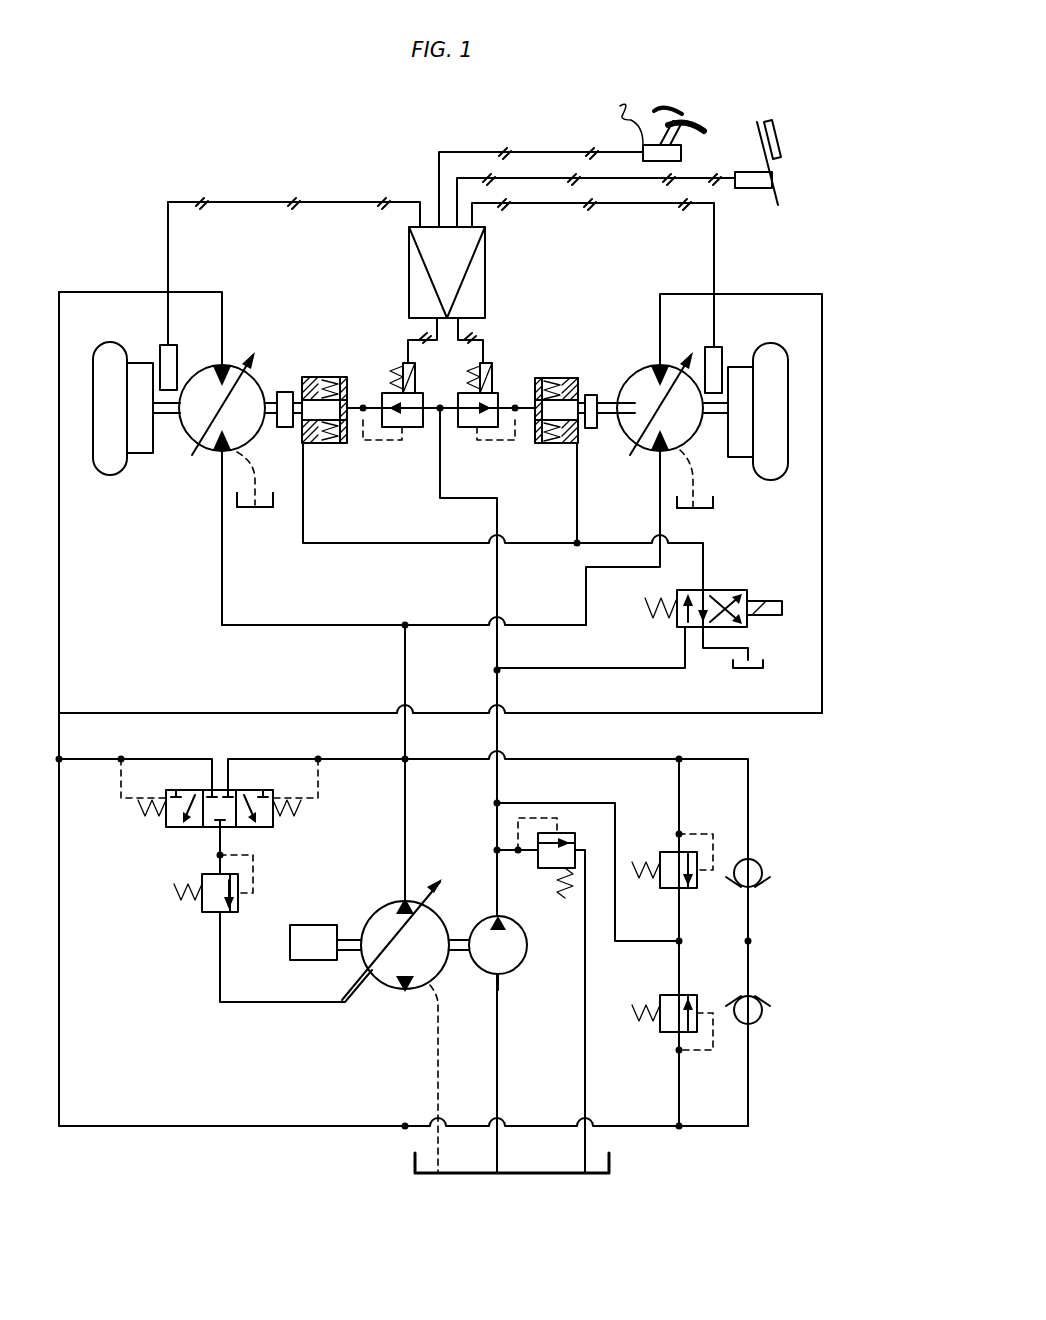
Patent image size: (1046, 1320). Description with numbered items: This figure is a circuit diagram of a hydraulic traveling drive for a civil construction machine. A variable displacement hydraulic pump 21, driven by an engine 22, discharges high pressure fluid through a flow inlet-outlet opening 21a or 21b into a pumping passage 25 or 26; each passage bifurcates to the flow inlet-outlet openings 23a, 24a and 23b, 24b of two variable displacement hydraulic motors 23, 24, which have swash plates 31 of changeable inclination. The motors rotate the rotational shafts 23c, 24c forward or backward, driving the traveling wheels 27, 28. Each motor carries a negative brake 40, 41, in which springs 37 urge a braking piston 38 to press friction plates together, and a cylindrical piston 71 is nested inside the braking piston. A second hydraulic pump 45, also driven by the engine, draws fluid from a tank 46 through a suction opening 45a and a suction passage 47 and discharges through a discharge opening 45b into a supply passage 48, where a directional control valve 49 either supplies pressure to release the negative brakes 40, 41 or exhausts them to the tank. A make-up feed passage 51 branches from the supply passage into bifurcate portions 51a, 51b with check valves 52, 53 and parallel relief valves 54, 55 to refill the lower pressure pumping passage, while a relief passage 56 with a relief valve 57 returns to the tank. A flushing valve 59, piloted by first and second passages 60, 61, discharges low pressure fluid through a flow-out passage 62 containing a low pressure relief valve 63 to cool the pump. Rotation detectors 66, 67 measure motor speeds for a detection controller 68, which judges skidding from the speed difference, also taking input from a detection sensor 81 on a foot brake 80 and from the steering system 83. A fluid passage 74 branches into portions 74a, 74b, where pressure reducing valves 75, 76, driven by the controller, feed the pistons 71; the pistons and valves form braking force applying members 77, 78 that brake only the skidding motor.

The variable displacement hydraulic pump 21 is at (362, 925).
The flow inlet-outlet opening 21a is at (400, 900).
The flow inlet-outlet opening 21b is at (398, 995).
The engine 22 is at (306, 925).
The variable displacement hydraulic motor 23 is at (236, 497).
The flow inlet-outlet opening 23a is at (216, 456).
The flow inlet-outlet opening 23b is at (217, 370).
The rotational shaft 23c is at (166, 418).
The variable displacement hydraulic motor 24 is at (692, 462).
The flow inlet-outlet opening 24a is at (655, 456).
The flow inlet-outlet opening 24b is at (652, 370).
The rotational shaft 24c is at (716, 418).
The pumping passage 25 is at (404, 672).
The pumping passage 26 is at (60, 990).
The traveling wheel 27 is at (108, 345).
The traveling wheel 28 is at (775, 346).
The swash plate 31 is at (250, 354).
The springs 37 is at (330, 377).
The braking piston 38 is at (305, 376).
The negative brake 40 is at (340, 456).
The negative brake 41 is at (562, 458).
The hydraulic pump 45 is at (508, 976).
The suction opening 45a is at (494, 980).
The discharge opening 45b is at (492, 920).
The tank 46 is at (712, 510).
The suction passage 47 is at (499, 1040).
The supply passage 48 is at (612, 670).
The directional control valve 49 is at (742, 590).
The make-up feed passage 51 is at (642, 943).
The bifurcate portion 51a is at (722, 762).
The bifurcate portion 51b is at (716, 1130).
The check valve 52 is at (760, 865).
The check valve 53 is at (760, 1001).
The relief valve 54 is at (664, 892).
The relief valve 55 is at (666, 1036).
The relief passage 56 is at (584, 950).
The relief valve 57 is at (540, 870).
The flushing valve 59 is at (176, 830).
The first passage 60 is at (278, 762).
The second passage 61 is at (98, 762).
The flow-out passage 62 is at (218, 985).
The low pressure relief valve 63 is at (212, 916).
The rotation detector 66 is at (162, 347).
The rotation detector 67 is at (722, 350).
The detection controller 68 is at (487, 270).
The cylindrical piston 71 is at (284, 430).
The fluid passage 74 is at (496, 590).
The bifurcate portion 74a is at (377, 442).
The bifurcate portion 74b is at (501, 442).
The pressure reducing valve 75 is at (384, 394).
The pressure reducing valve 76 is at (494, 394).
The braking force applying member 77 is at (258, 280).
The braking force applying member 78 is at (622, 280).
The foot brake 80 is at (773, 124).
The detection sensor 81 is at (757, 190).
The steering system 83 is at (693, 122).